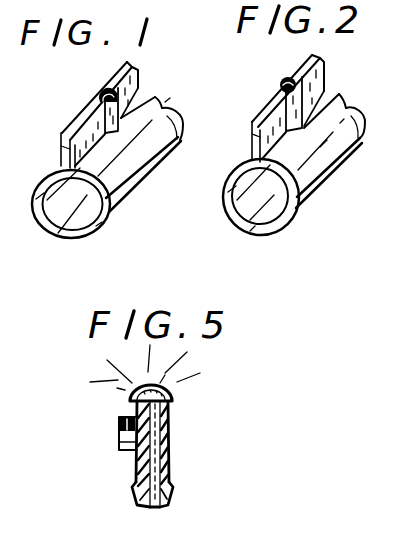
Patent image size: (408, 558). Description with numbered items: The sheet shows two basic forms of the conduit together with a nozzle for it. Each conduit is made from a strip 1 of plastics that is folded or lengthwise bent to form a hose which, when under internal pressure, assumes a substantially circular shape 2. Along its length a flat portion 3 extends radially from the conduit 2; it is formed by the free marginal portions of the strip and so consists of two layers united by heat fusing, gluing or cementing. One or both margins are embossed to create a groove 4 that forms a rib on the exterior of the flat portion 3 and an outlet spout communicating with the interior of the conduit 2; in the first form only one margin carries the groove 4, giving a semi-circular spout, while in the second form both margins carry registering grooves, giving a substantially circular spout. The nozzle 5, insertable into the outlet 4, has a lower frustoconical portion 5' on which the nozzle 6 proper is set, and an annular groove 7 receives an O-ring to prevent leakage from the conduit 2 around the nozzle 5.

In FIG. 1, the strip of plastics / hose 1 is at (143, 180).
In FIG. 2, the strip of plastics / hose 1 is at (338, 166).
In FIG. 1, the conduit 2 is at (48, 177).
In FIG. 2, the conduit 2 is at (229, 178).
In FIG. 1, the flat portion 3 is at (135, 81).
In FIG. 2, the flat portion 3 is at (322, 80).
In FIG. 1, the embossed groove 4 is at (104, 90).
In FIG. 2, the embossed groove 4 is at (282, 83).
In FIG. 5, the nozzle 5 is at (178, 453).
In FIG. 5, the lower frustoconical portion 5' is at (174, 509).
In FIG. 5, the nozzle proper 6 is at (172, 398).
In FIG. 5, the annular groove 7 is at (135, 464).